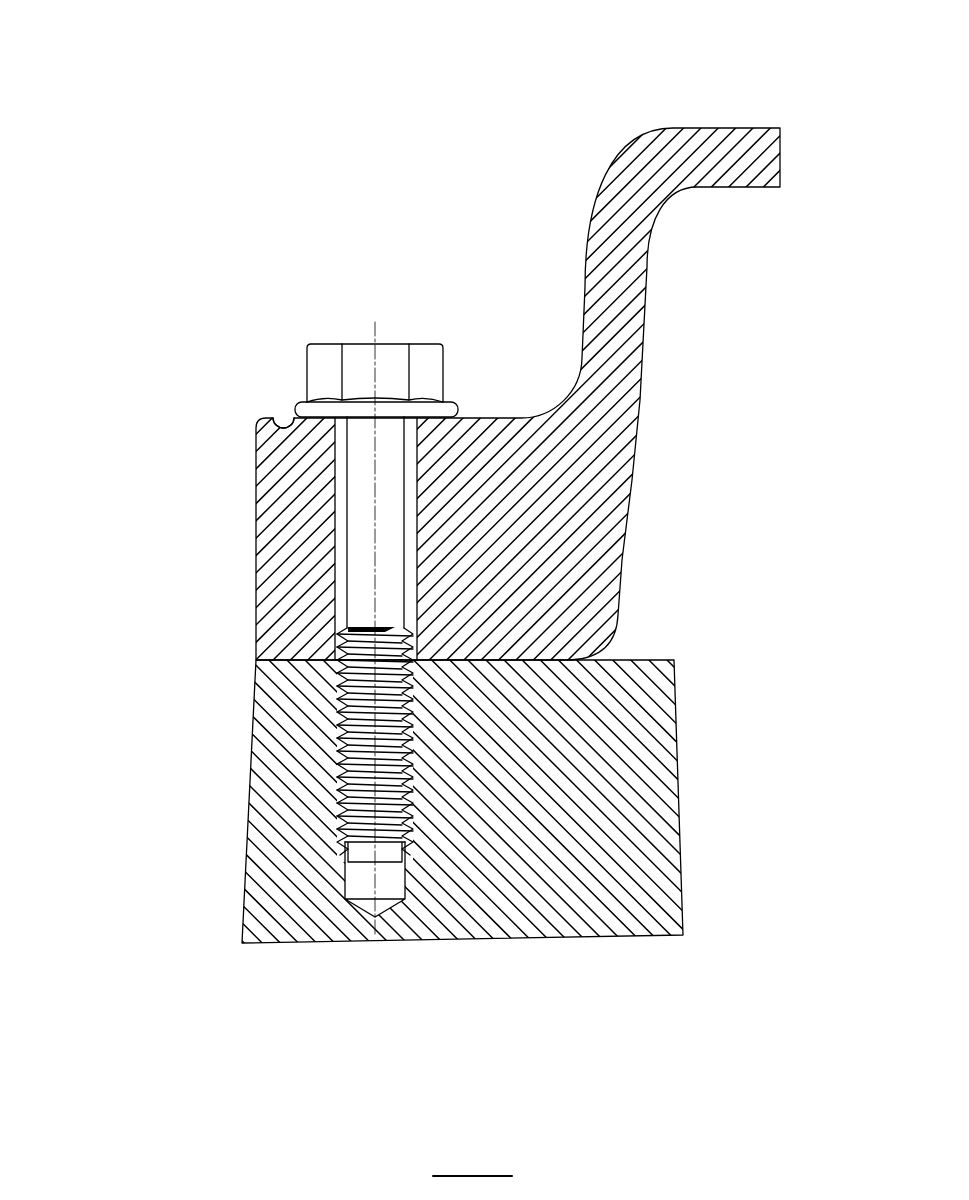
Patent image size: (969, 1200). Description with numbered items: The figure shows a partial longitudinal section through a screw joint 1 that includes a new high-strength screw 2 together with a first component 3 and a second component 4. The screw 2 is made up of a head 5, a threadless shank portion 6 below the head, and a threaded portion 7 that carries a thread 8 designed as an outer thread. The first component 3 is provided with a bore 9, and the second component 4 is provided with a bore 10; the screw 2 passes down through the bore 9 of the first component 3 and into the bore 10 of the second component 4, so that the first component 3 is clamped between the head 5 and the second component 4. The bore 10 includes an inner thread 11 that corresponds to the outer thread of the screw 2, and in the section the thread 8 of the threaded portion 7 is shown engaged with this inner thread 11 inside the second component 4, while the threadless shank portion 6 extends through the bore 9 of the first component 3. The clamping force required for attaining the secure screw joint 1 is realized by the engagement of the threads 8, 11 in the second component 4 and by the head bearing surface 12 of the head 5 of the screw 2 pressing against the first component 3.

The screw joint 1 is at (195, 150).
The high-strength screw 2 is at (306, 329).
The first component 3 is at (602, 235).
The second component 4 is at (642, 679).
The head 5 is at (417, 355).
The threadless shank portion 6 is at (334, 457).
The threaded portion 7 is at (338, 740).
The thread 8 is at (338, 765).
The bore 9 is at (398, 488).
The bore 10 is at (375, 873).
The inner thread 11 is at (410, 833).
The head bearing surface 12 is at (277, 423).